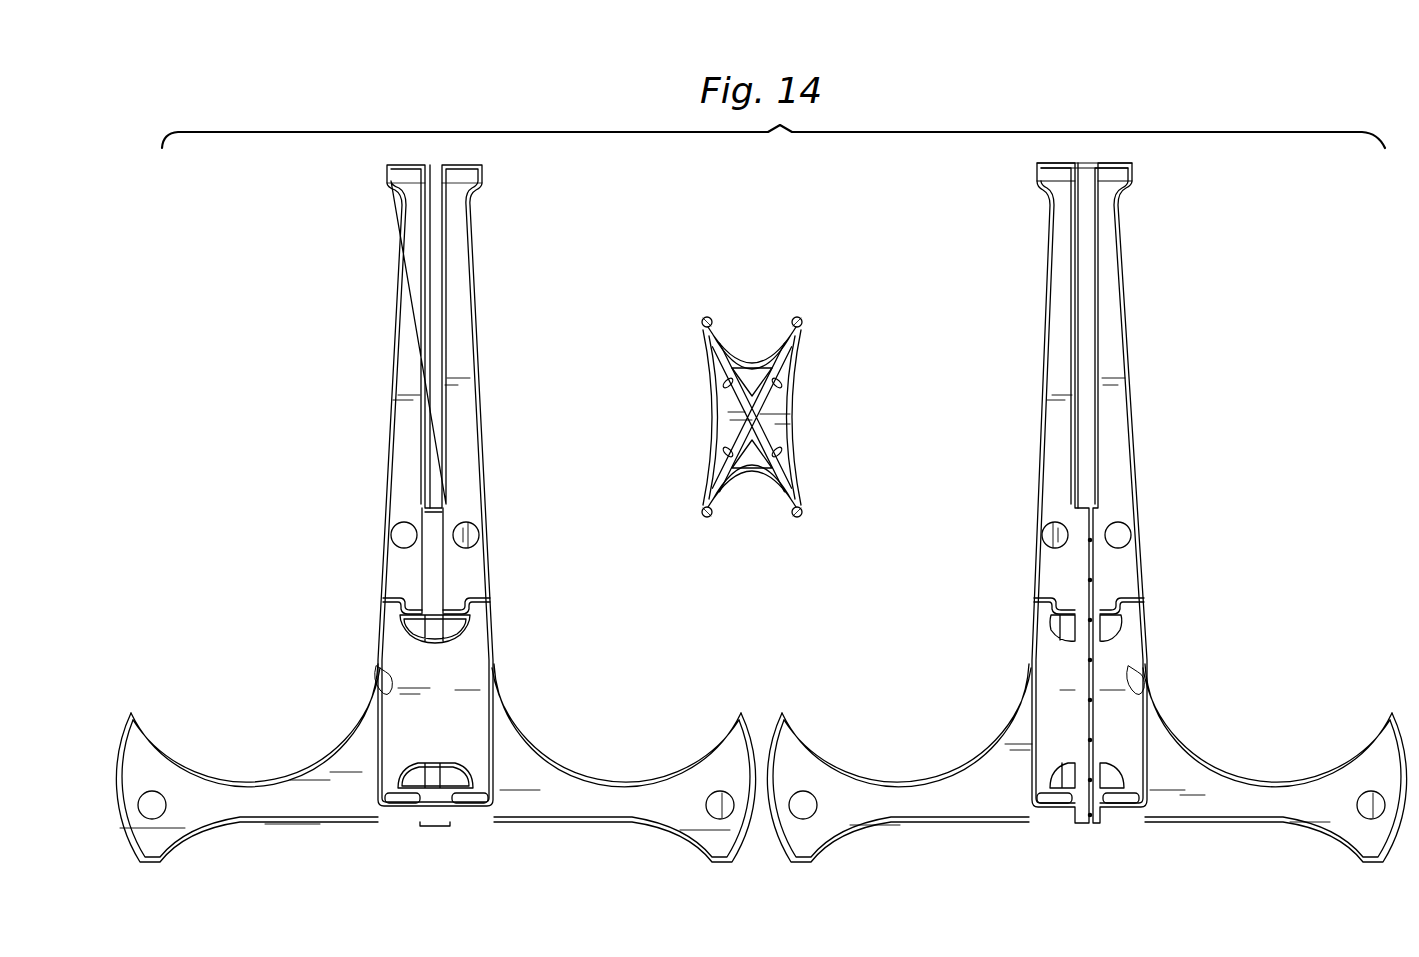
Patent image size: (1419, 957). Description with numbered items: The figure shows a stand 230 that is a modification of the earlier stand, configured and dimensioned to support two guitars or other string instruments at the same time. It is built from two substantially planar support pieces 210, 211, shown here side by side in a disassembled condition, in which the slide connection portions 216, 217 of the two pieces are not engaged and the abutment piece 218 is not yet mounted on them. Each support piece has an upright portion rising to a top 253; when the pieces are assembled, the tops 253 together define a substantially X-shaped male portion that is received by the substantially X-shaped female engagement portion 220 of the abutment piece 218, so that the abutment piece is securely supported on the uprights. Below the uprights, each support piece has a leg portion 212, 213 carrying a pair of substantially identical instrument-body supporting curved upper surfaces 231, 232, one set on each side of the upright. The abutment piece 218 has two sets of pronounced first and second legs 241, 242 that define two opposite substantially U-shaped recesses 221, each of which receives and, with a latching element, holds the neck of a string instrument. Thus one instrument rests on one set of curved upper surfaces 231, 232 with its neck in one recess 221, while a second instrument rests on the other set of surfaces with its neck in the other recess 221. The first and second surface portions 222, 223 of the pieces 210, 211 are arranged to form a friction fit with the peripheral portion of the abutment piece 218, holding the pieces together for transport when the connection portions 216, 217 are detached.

The support piece 210 is at (300, 537).
The support piece 211 is at (1212, 480).
The leg portion 212 is at (148, 771).
The leg portion 213 is at (1390, 776).
The slide connection portion 216 is at (423, 284).
The slide connection portion 217 is at (1092, 682).
The abutment piece 218 is at (805, 400).
The engagement portion 220 is at (757, 403).
The U-shaped recess 221 is at (752, 338).
The first surface portion 222 is at (388, 693).
The second surface portion 223 is at (1136, 700).
The stand 230 is at (1150, 120).
The curved upper surface 231 is at (262, 768).
The curved upper surface 232 is at (912, 760).
The first leg 241 is at (800, 320).
The second leg 242 is at (707, 320).
The top 253 is at (410, 163).